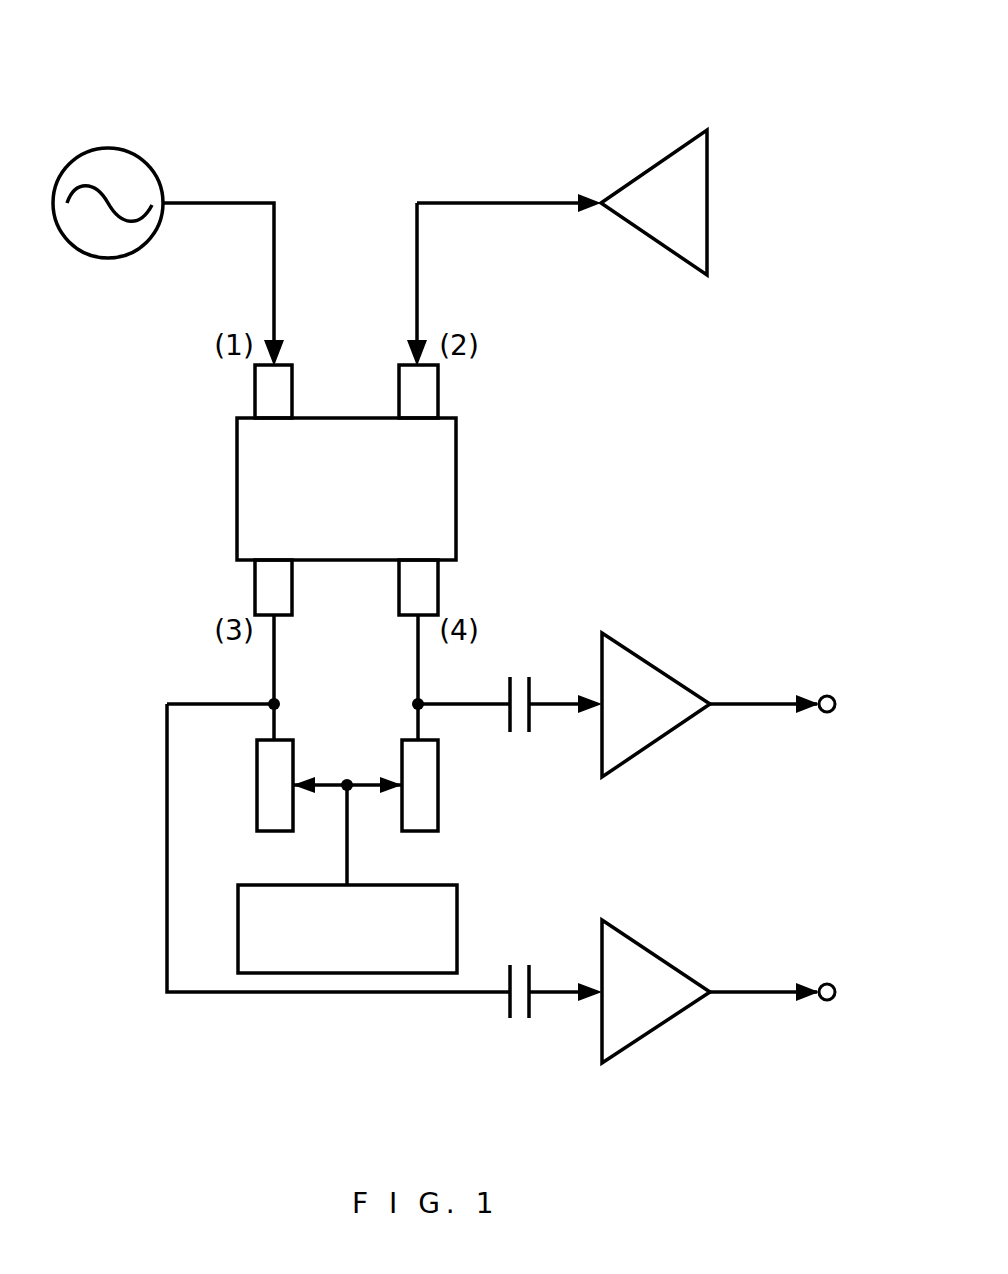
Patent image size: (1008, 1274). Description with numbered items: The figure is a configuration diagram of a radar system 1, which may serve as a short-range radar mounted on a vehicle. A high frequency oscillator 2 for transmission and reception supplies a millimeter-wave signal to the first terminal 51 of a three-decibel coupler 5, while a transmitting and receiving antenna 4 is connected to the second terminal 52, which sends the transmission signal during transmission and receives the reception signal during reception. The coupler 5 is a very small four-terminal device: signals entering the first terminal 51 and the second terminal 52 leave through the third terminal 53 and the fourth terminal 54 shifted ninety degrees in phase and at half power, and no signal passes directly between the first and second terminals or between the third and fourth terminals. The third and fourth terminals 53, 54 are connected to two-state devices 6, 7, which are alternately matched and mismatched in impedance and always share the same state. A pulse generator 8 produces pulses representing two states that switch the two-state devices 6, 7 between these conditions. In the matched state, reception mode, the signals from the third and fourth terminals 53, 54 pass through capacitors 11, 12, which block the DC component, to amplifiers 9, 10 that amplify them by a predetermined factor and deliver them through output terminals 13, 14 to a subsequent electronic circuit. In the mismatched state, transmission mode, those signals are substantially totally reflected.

The radar system 1 is at (428, 100).
The high frequency oscillator 2 is at (108, 150).
The transmitting and receiving antenna 4 is at (652, 165).
The 3 dB coupler 5 is at (237, 490).
The first terminal 51 is at (255, 390).
The second terminal 52 is at (438, 390).
The third terminal 53 is at (255, 588).
The fourth terminal 54 is at (438, 588).
The two-state device 6 is at (257, 785).
The two-state device 7 is at (438, 785).
The pulse generator 8 is at (457, 915).
The amplifier 9 is at (657, 667).
The amplifier 10 is at (657, 955).
The capacitor 11 is at (528, 668).
The capacitor 12 is at (528, 957).
The output terminal 13 is at (822, 698).
The output terminal 14 is at (822, 986).